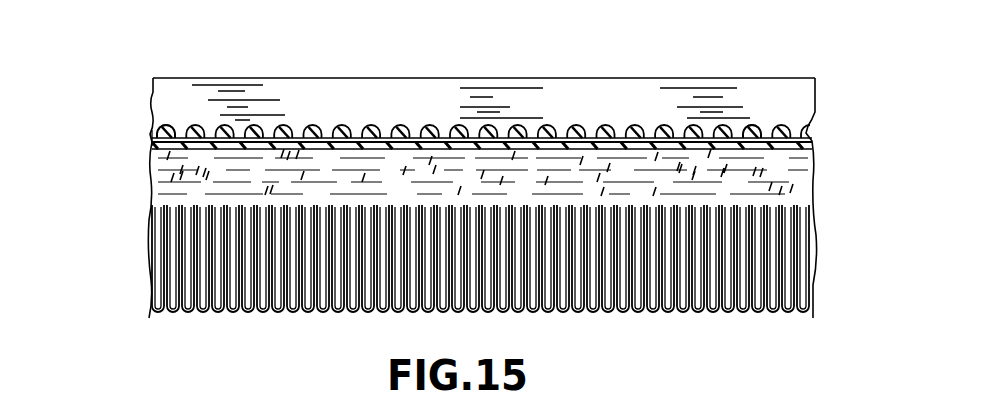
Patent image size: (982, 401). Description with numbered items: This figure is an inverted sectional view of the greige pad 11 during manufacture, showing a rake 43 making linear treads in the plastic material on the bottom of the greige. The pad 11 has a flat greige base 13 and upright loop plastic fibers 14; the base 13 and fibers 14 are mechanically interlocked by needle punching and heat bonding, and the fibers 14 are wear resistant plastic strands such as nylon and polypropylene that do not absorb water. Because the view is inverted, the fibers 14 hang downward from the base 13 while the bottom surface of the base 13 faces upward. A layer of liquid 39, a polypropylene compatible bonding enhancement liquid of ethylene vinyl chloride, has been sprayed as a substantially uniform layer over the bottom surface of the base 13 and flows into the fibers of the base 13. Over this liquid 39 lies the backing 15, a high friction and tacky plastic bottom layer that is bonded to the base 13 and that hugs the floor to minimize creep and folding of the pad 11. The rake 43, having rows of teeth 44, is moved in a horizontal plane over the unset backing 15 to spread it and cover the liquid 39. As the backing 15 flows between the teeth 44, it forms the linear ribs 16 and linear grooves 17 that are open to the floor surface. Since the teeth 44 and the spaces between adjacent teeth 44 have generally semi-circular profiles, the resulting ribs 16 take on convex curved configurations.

The pad 11 is at (291, 311).
The greige base 13 is at (803, 185).
The upright loop plastic fibers 14 is at (795, 312).
The backing 15 is at (153, 139).
The linear ribs 16 is at (757, 129).
The linear grooves 17 is at (180, 134).
The layer of liquid 39 is at (800, 147).
The rake 43 is at (531, 98).
The teeth 44 is at (623, 132).